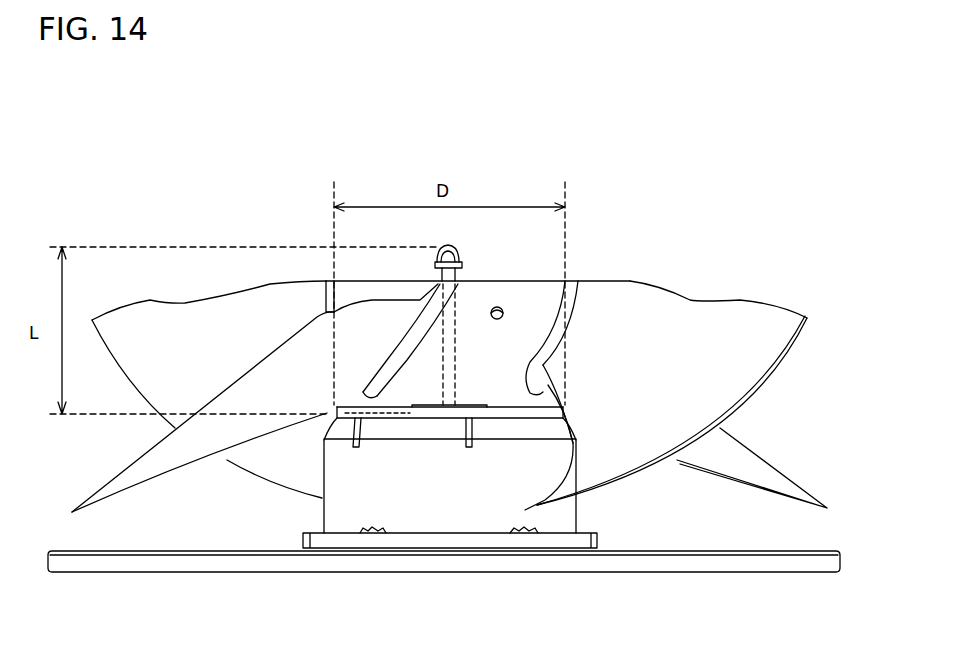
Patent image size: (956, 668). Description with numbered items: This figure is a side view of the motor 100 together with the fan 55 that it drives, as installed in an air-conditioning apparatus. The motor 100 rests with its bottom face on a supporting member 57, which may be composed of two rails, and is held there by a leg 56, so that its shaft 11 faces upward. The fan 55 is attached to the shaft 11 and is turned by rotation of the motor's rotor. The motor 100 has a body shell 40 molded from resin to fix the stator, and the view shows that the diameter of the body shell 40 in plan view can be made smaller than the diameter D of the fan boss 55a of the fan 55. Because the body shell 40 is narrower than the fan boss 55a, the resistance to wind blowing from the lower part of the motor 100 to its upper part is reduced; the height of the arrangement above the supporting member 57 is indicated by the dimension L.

The shaft 11 is at (458, 253).
The body shell 40 is at (578, 497).
The fan 55 is at (712, 300).
The fan boss 55a is at (523, 295).
The leg 56 is at (596, 540).
The supporting member 57 is at (648, 572).
The motor 100 is at (220, 488).